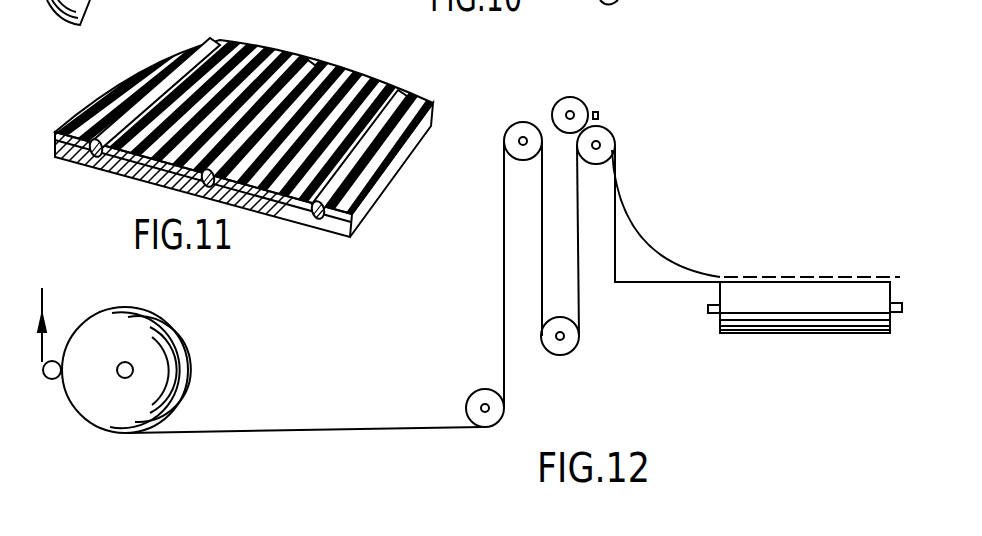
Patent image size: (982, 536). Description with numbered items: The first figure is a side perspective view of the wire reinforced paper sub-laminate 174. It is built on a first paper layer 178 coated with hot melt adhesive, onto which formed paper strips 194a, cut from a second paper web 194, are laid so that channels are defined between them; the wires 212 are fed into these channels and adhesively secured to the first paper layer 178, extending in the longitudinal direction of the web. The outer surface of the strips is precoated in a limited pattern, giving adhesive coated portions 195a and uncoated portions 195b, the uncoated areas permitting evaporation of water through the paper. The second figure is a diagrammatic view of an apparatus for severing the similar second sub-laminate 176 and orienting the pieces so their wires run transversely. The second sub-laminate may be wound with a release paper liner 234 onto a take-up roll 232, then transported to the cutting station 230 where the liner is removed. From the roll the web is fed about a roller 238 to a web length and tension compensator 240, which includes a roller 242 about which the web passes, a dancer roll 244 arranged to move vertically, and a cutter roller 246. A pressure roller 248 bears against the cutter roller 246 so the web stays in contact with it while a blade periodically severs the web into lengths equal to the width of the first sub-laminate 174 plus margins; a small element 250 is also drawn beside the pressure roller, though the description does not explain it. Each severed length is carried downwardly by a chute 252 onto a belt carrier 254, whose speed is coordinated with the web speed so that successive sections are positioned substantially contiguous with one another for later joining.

In FIG. 11, the sub-laminate 174 is at (352, 66).
In FIG. 11, the first paper layer 178 is at (311, 235).
In FIG. 11, the second paper web 194 is at (159, 51).
In FIG. 11, the paper strips 194a is at (240, 45).
In FIG. 11, the adhesive coated portions 195a is at (406, 94).
In FIG. 11, the uncoated portions 195b is at (389, 148).
In FIG. 11, the wires 212 is at (327, 41).
In FIG. 12, the cutting station 230 is at (633, 160).
In FIG. 12, the take-up roll 232 is at (173, 360).
In FIG. 12, the release paper liner 234 is at (44, 310).
In FIG. 12, the second sub-laminate web 176 is at (247, 432).
In FIG. 12, the roller 238 is at (478, 391).
In FIG. 12, the roller 242 is at (518, 123).
In FIG. 12, the dancer roll 244 is at (567, 347).
In FIG. 12, the cutter roller 246 is at (601, 158).
In FIG. 12, the pressure roller 248 is at (588, 103).
In FIG. 12, the sensor 250 is at (599, 116).
In FIG. 12, the chute 252 is at (653, 240).
In FIG. 12, the belt carrier 254 is at (826, 322).
In FIG. 12, the web length and tension compensator 240 is at (605, 255).